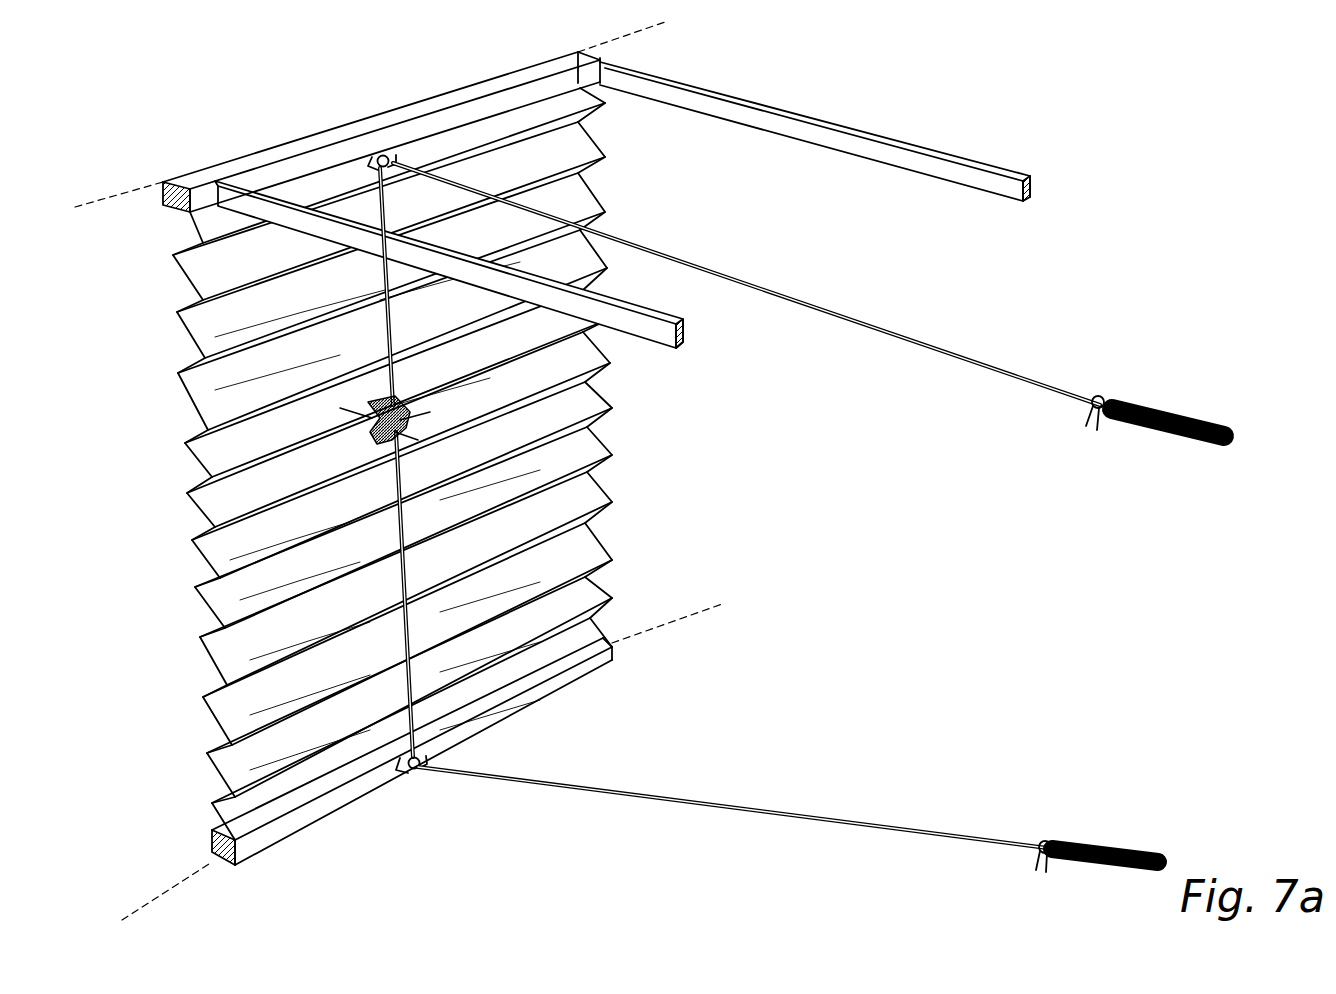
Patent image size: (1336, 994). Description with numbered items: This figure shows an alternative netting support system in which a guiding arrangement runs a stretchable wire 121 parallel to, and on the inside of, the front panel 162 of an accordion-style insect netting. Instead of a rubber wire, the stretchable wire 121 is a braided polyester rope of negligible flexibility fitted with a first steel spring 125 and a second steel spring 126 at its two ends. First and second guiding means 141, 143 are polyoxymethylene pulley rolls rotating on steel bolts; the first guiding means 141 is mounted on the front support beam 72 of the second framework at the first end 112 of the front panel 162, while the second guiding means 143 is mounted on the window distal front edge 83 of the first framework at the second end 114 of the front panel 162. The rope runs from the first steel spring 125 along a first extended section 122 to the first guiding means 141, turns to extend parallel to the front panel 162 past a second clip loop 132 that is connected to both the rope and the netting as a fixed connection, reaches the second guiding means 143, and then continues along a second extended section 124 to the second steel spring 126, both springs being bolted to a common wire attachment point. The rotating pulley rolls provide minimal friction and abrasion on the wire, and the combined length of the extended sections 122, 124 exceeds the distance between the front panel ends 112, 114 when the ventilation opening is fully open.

The window distal front edge 83 is at (425, 118).
The second (top) end of the front panel 114 is at (332, 187).
The second guiding means 143 is at (393, 153).
The stretchable wire 121 is at (972, 346).
The second extended section of the stretchable wire 124 is at (821, 302).
The second steel spring 126 is at (1178, 400).
The front panel 162 is at (270, 341).
The second clip loop 132 is at (405, 422).
The front support beam 72 is at (578, 668).
The first extended section of the stretchable wire 122 is at (880, 798).
The first steel spring 125 is at (1118, 828).
The first end of the front panel 112 is at (318, 783).
The first guiding means 141 is at (415, 776).